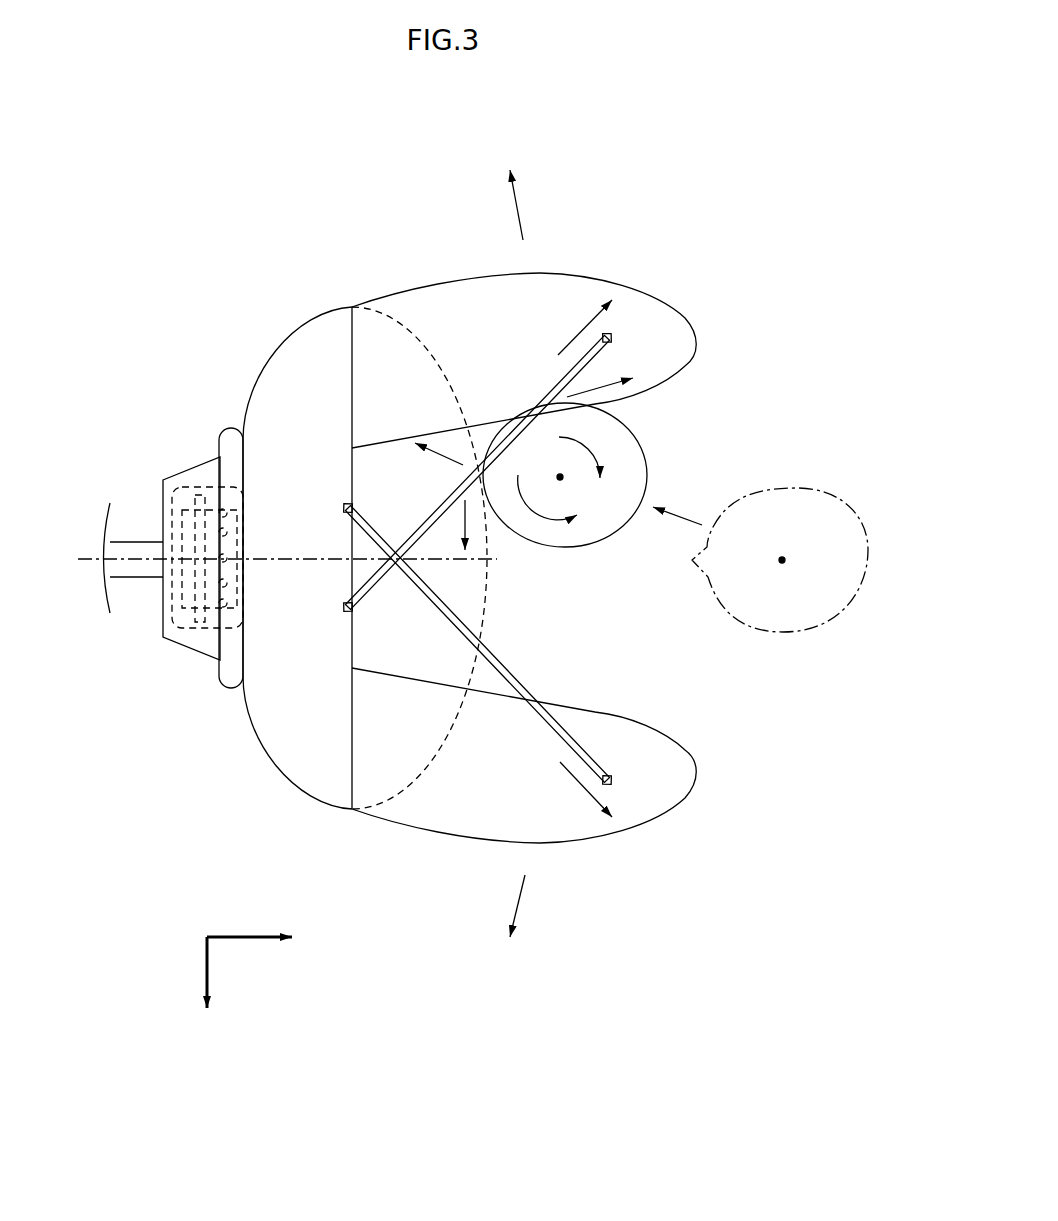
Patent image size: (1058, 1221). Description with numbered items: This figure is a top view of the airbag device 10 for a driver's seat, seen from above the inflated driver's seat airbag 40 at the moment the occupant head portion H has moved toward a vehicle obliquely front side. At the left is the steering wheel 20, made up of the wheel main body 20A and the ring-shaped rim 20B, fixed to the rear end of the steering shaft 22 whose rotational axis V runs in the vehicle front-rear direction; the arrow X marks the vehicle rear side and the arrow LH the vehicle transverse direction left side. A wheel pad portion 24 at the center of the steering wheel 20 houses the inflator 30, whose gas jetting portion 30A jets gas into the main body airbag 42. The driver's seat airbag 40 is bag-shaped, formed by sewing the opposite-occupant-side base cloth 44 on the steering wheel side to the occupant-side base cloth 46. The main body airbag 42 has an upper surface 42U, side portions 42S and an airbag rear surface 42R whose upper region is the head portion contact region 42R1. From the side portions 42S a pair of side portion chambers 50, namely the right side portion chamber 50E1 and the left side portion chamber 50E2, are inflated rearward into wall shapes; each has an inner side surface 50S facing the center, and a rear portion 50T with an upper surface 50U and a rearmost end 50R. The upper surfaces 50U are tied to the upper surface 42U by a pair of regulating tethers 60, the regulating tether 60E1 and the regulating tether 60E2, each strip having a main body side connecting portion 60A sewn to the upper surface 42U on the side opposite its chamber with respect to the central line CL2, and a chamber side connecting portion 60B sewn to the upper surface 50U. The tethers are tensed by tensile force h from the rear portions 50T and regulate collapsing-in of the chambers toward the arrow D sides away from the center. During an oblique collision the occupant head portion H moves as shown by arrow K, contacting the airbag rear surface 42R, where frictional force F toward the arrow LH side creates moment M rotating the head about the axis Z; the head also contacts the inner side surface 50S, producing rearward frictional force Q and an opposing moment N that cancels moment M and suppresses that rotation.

The airbag device for a driver's seat 10 is at (140, 315).
The steering wheel 20 is at (162, 477).
The wheel main body 20A is at (182, 470).
The rim 20B is at (232, 443).
The steering shaft 22 is at (132, 577).
The wheel pad portion 24 is at (247, 530).
The inflator 30 is at (188, 607).
The gas jetting portion 30A is at (245, 577).
The driver's seat airbag 40 is at (370, 270).
The main body airbag 42 is at (273, 767).
The upper surface of the main body airbag 42U is at (283, 400).
The side portions of the main body airbag 42S is at (375, 330).
The airbag rear surface 42R is at (473, 672).
The head portion contact region 42R1 is at (485, 593).
The opposite-occupant-side base cloth 44 is at (273, 702).
The occupant-side base cloth 46 is at (473, 613).
The side portion chambers 50 is at (569, 551).
The one side portion chamber 50E1 is at (643, 282).
The other side portion chamber 50E2 is at (613, 840).
The inner side surface 50S is at (478, 427).
The upper surface of rear portion 50U is at (577, 303).
The rear portion of side portion chamber 50T is at (608, 287).
The rear end of protruding bag 50R is at (700, 340).
The regulating tethers 60 is at (486, 555).
The one regulating tether 60E1 is at (498, 417).
The other regulating tether 60E2 is at (503, 683).
The main body side connecting portion 60A is at (343, 505).
The chamber side connecting portion 60B is at (613, 333).
The tensile force h is at (574, 332).
The central line along thickness direction CL2 is at (312, 560).
The arrow D direction D is at (517, 215).
The frictional force F is at (460, 525).
The arrow K is at (447, 457).
The frictional force Q is at (603, 398).
The occupant head portion H is at (647, 455).
The axis Z is at (563, 480).
The moment N is at (572, 437).
The moment M is at (560, 518).
The rotational axis V is at (92, 562).
The arrow X is at (264, 937).
The arrow LH is at (213, 997).